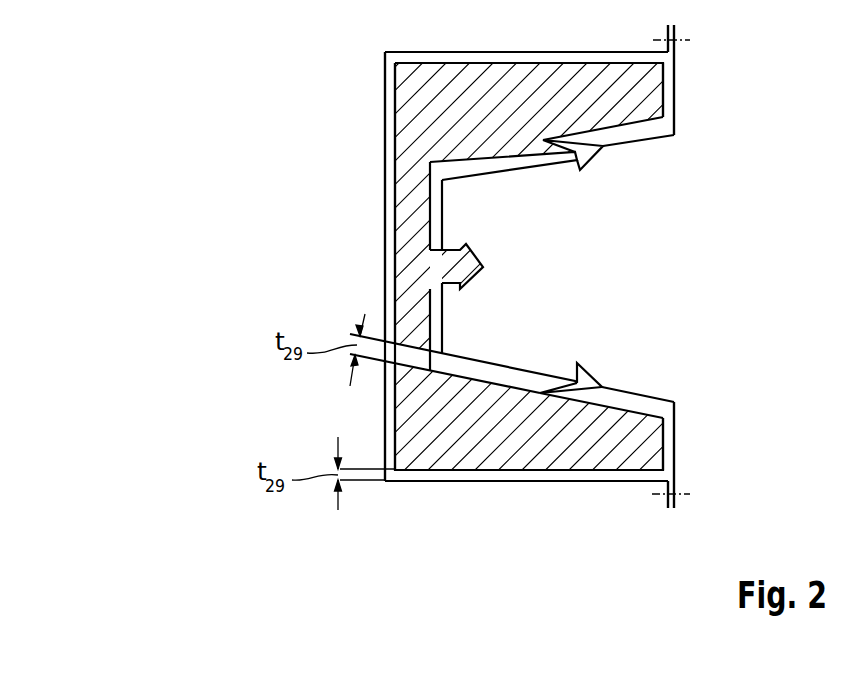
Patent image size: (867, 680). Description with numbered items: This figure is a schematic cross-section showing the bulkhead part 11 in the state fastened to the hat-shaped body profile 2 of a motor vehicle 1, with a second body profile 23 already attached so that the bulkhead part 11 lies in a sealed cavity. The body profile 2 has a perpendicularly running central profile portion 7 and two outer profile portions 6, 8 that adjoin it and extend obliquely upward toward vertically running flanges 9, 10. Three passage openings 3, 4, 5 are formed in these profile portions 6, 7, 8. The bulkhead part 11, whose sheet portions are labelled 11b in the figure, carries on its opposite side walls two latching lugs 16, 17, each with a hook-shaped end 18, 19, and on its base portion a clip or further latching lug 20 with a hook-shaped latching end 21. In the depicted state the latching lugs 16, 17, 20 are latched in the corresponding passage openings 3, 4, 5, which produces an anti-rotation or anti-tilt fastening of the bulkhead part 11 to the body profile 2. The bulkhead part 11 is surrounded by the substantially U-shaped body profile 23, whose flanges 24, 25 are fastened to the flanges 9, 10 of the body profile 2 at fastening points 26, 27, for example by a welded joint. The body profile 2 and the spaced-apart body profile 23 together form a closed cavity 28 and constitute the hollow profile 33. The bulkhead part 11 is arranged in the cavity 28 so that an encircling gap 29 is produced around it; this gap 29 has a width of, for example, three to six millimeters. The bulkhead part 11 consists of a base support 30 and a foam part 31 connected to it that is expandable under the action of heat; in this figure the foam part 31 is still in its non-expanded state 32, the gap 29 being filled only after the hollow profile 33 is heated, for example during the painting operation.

The motor vehicle 1 is at (583, 266).
The body profile 2 is at (690, 123).
The passage opening 3 is at (602, 356).
The passage opening 4 is at (401, 272).
The passage opening 5 is at (604, 178).
The profile portion 6 is at (602, 387).
The central profile portion 7 is at (433, 286).
The profile portion 8 is at (603, 150).
The flange 9 is at (676, 448).
The flange 10 is at (676, 30).
The bulkhead part 11 is at (395, 340).
The inner sheet 11b is at (497, 197).
The latching lug 16 is at (497, 336).
The latching lug 17 is at (537, 205).
The hook-shaped end 18 is at (588, 364).
The hook-shaped end 19 is at (583, 172).
The further latching lug 20 is at (456, 186).
The hook-shaped latching end 21 is at (470, 249).
The body profile 23 is at (328, 420).
The flange 24 is at (684, 513).
The flange 25 is at (685, 34).
The fastening point 26 is at (666, 500).
The fastening point 27 is at (668, 30).
The cavity 28 is at (445, 314).
The gap 29 is at (445, 314).
The base support 30 is at (395, 340).
The foam part 31 is at (395, 340).
The non-expanded state 32 is at (418, 93).
The hollow profile 33 is at (392, 405).